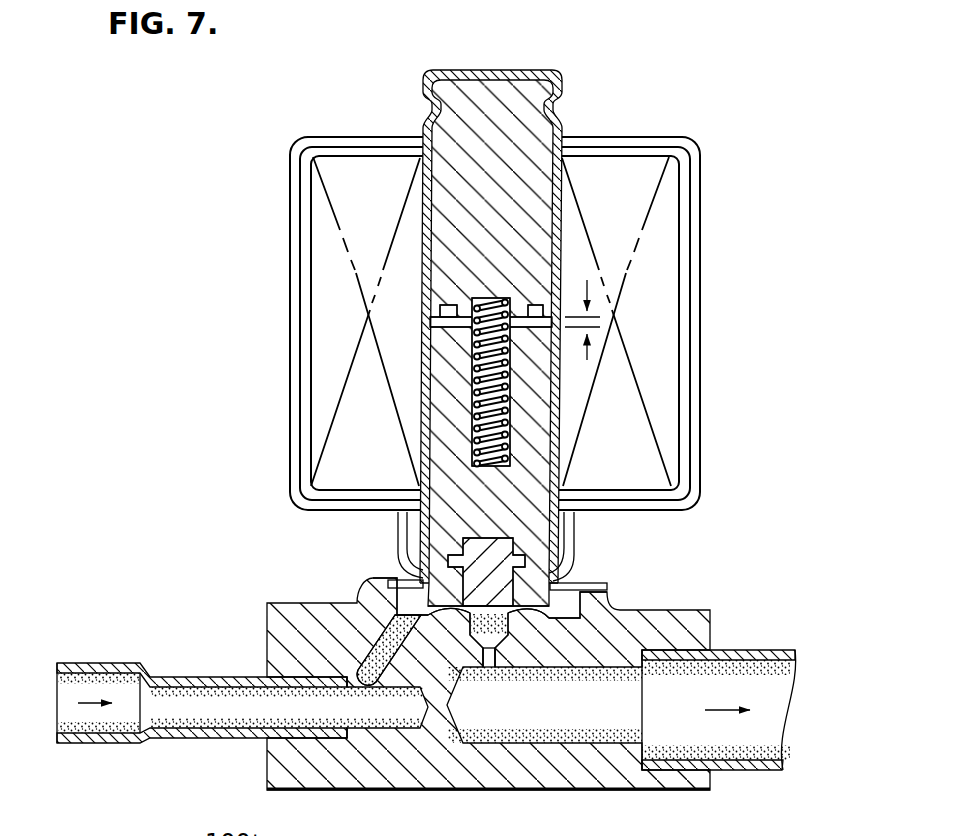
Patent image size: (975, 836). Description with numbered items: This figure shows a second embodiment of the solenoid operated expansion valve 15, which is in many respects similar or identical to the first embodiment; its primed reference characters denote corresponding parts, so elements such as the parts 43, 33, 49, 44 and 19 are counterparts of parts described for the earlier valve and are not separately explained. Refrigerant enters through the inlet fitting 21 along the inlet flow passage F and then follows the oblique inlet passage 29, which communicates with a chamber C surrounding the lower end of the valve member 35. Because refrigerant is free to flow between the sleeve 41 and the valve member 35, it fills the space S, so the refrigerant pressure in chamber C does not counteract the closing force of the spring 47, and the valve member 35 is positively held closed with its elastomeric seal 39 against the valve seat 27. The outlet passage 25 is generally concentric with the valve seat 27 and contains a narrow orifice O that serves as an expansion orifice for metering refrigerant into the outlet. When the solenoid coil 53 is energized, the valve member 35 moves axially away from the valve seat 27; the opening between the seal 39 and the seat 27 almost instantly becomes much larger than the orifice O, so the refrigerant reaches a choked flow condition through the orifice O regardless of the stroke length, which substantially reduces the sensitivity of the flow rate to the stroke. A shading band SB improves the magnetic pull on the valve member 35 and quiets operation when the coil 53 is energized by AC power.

The solenoid operated expansion valve 15 is at (671, 54).
The sleeve 41 is at (547, 70).
The plunger 43 is at (526, 116).
The coil housing 33 is at (703, 157).
The solenoid coil 53 is at (683, 215).
The shading band SB is at (445, 304).
The space S is at (582, 304).
The spring seat plate 49 is at (472, 378).
The spring 47 is at (504, 384).
The valve member 35 is at (524, 455).
The retaining cup 44 is at (396, 567).
The elastomeric seal 39 is at (497, 583).
The chamber C is at (559, 603).
The inlet passage 29 is at (331, 643).
The valve seat 27 is at (373, 605).
The outlet passage 25 is at (568, 630).
The inlet fitting 21 is at (127, 725).
The inlet flow passage F is at (320, 709).
The orifice O is at (489, 662).
The valve body 19 is at (528, 794).